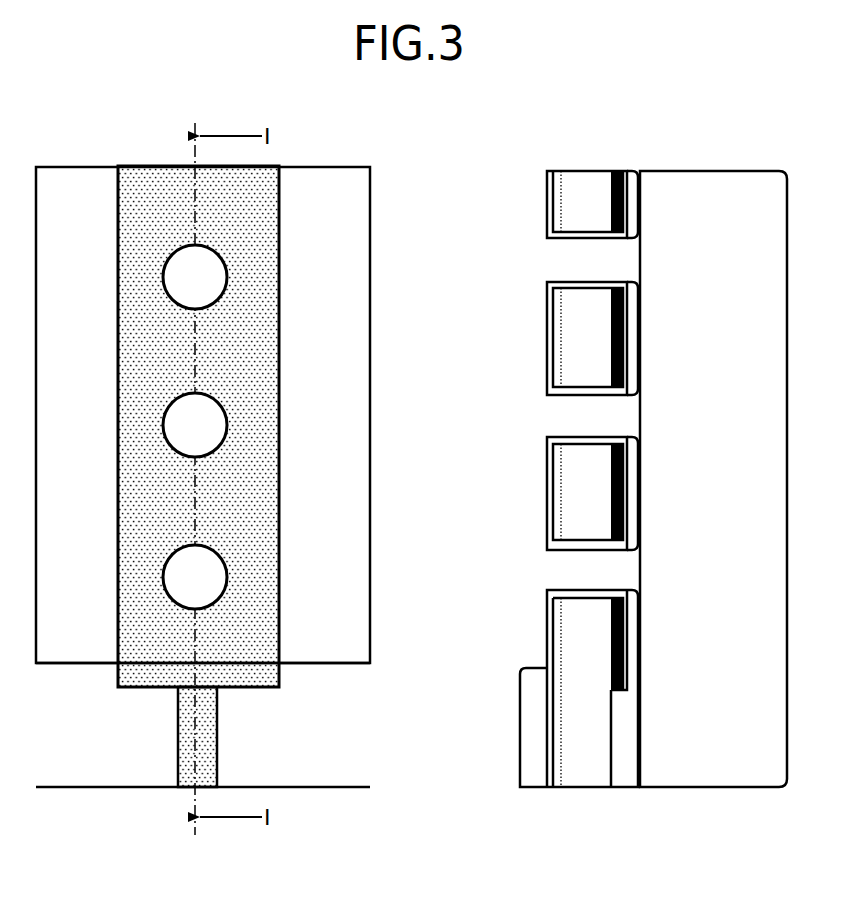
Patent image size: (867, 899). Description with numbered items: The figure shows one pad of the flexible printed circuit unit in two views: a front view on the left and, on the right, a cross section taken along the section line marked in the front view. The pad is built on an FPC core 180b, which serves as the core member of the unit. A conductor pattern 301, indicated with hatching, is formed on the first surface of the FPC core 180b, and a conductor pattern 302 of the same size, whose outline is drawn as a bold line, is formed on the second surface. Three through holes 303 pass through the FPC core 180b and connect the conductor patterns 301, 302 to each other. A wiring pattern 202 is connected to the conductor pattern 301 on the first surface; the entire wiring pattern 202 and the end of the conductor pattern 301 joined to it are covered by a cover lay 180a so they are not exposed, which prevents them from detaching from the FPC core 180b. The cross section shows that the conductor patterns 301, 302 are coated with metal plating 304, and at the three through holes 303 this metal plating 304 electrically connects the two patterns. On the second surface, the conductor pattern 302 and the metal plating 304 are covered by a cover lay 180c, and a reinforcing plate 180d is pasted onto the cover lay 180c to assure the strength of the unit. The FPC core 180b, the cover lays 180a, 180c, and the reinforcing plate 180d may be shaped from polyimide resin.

The conductor pattern 301 is at (262, 533).
The conductor pattern 302 is at (279, 435).
The through holes 303 is at (222, 416).
The metal plating 304 is at (547, 479).
The wiring pattern 202 is at (217, 737).
The cover lay 180a is at (350, 758).
The FPC core 180b is at (350, 637).
The cover lay 180c is at (624, 790).
The reinforcing plate 180d is at (712, 790).